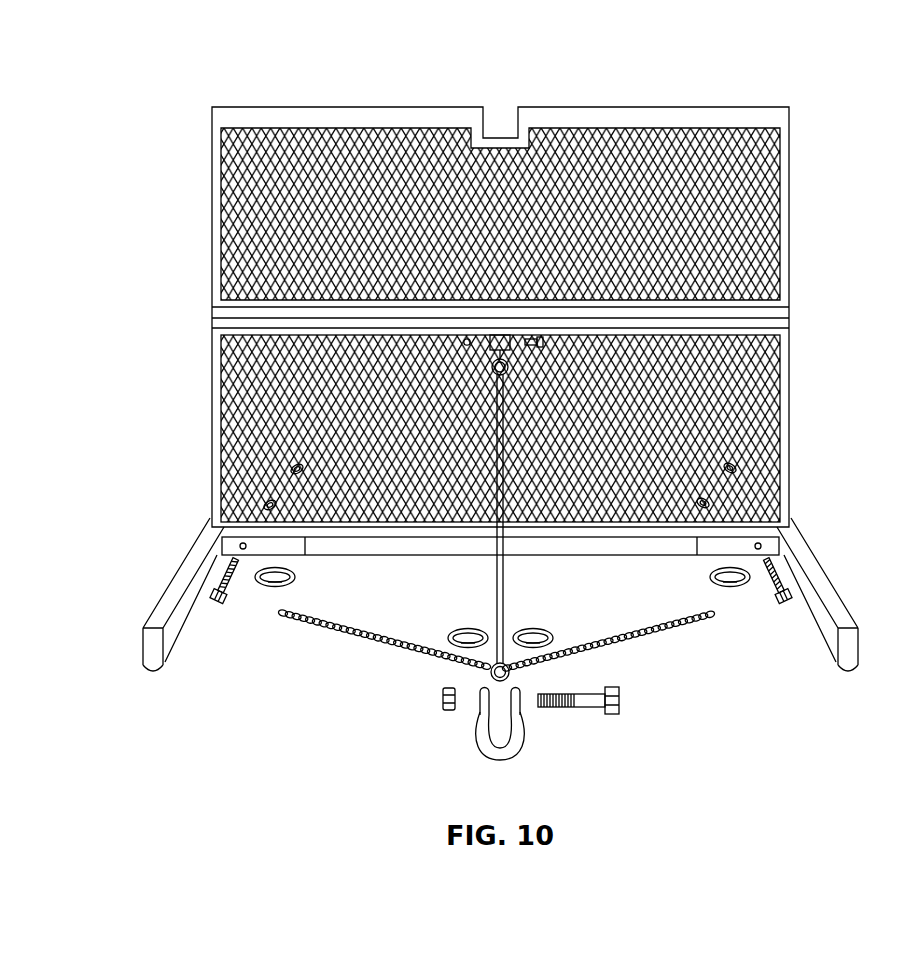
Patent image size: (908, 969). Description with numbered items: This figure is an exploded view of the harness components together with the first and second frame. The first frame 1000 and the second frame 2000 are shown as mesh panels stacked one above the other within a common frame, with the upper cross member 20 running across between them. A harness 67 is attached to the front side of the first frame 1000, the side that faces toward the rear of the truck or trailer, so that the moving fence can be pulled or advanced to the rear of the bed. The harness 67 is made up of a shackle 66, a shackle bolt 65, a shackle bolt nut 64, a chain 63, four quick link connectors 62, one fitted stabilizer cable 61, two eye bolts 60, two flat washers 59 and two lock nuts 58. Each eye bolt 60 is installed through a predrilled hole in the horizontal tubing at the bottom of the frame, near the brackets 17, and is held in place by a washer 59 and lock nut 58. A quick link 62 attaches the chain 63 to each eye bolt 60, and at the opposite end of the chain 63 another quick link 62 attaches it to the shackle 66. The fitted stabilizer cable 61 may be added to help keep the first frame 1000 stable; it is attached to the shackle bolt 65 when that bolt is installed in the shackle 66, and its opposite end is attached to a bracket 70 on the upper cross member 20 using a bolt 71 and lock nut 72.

The upper mesh panel 2000 is at (655, 147).
The first frame 1000 is at (722, 392).
The upper cross member 20 is at (208, 322).
The mounting bracket 17 is at (295, 553).
The lock nut 58 is at (278, 462).
The flat washer 59 is at (246, 497).
The eye bolt 60 is at (216, 590).
The fitted stabilizer cable 61 is at (506, 592).
The quick link connector 62 is at (271, 588).
The chain 63 is at (366, 648).
The shackle bolt nut 64 is at (447, 712).
The shackle bolt 65 is at (622, 700).
The shackle 66 is at (516, 746).
The harness 67 is at (662, 662).
The bracket 70 is at (500, 324).
The bolt 71 is at (558, 342).
The lock nut 72 is at (454, 322).